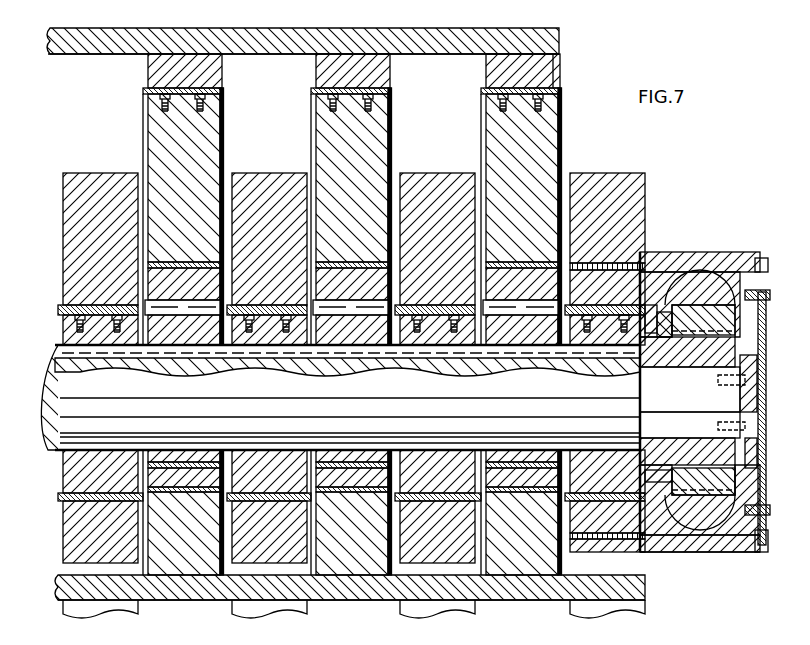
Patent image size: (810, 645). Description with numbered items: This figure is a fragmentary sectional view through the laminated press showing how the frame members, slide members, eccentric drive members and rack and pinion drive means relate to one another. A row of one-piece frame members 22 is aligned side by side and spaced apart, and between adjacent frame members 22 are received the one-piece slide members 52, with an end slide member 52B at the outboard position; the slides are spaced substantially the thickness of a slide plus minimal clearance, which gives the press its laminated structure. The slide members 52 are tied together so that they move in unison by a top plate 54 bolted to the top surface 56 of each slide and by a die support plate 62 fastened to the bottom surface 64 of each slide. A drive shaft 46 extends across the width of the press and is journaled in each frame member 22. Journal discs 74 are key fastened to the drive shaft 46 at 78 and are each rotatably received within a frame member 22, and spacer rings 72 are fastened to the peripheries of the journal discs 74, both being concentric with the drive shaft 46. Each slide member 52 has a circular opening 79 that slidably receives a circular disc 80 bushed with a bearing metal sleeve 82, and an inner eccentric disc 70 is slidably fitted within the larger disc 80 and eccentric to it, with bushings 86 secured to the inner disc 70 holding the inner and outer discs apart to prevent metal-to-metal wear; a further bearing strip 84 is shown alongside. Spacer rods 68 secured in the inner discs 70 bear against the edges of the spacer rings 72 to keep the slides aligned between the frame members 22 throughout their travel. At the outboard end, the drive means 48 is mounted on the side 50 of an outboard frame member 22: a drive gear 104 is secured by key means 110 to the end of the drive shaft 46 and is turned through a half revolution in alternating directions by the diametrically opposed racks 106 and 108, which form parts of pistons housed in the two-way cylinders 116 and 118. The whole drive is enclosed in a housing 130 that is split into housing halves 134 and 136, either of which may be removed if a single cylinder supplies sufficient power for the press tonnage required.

The frame member 22 is at (76, 182).
The drive shaft 46 is at (340, 397).
The drive means 48 is at (705, 270).
The side of outboard frame member 50 is at (645, 203).
The slide member 52 is at (148, 69).
The end mounting block 52B is at (553, 65).
The top plate 54 is at (524, 30).
The top surface of slide 56 is at (180, 54).
The die support plate 62 is at (505, 592).
The bottom surface of slide member 64 is at (202, 600).
The spacer rod 68 is at (197, 303).
The inner eccentric disc 70 is at (209, 276).
The spacer ring 72 is at (118, 315).
The journal disc 74 is at (74, 318).
The key fastening 78 is at (349, 355).
The circular opening 79 is at (143, 92).
The circular disc 80 is at (158, 124).
The bearing metal sleeve 82 is at (224, 91).
The lower clamp strip 84 is at (200, 470).
The bushing 86 is at (158, 266).
The drive gear 104 is at (702, 450).
The rack 106 is at (700, 522).
The rack 108 is at (700, 280).
The key means 110 is at (650, 398).
The cylinder 116 is at (724, 522).
The cylinder 118 is at (690, 282).
The housing 130 is at (688, 554).
The housing half 134 is at (736, 526).
The housing half 136 is at (758, 292).